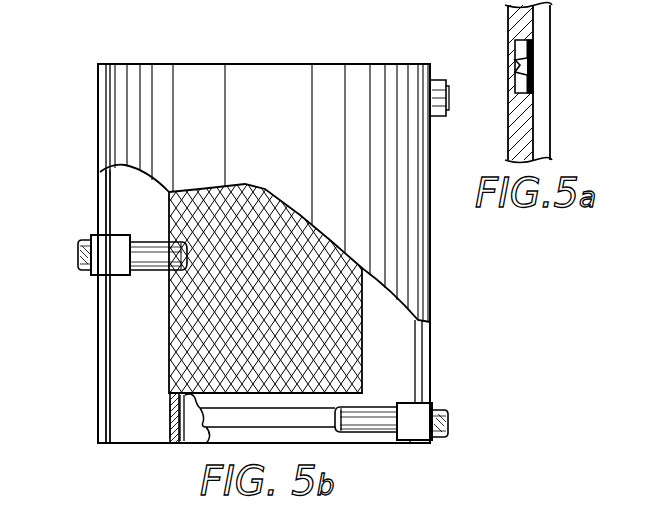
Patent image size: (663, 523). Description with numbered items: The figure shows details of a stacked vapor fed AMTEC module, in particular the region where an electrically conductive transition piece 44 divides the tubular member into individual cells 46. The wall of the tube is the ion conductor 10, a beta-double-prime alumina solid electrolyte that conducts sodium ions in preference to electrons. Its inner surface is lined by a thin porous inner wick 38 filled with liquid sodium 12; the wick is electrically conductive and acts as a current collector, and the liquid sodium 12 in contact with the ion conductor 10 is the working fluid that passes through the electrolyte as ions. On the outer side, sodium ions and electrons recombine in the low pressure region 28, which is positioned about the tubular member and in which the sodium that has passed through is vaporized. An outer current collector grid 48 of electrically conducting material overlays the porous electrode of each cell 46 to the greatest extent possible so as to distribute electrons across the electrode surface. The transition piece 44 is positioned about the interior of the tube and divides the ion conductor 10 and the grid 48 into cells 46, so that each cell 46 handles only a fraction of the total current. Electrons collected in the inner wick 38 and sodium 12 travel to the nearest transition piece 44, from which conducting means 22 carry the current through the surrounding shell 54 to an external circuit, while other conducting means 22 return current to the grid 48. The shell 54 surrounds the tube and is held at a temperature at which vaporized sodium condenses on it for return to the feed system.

In FIG. 5a, the ion conductor 10 is at (520, 30).
In FIG. 5b, the ion conductor 10 is at (173, 433).
In FIG. 5a, the liquid sodium 12 is at (515, 65).
In FIG. 5b, the liquid sodium 12 is at (172, 418).
In FIG. 5b, the conducting means 22 is at (440, 405).
In FIG. 5b, the low pressure region 28 is at (133, 322).
In FIG. 5a, the inner wick 38 is at (545, 92).
In FIG. 5b, the inner wick 38 is at (195, 440).
In FIG. 5a, the transition piece 44 is at (521, 95).
In FIG. 5b, the transition piece 44 is at (168, 412).
In FIG. 5b, the cell 46 is at (92, 225).
In FIG. 5b, the outer current collector grid 48 is at (362, 327).
In FIG. 5b, the shell 54 is at (115, 100).